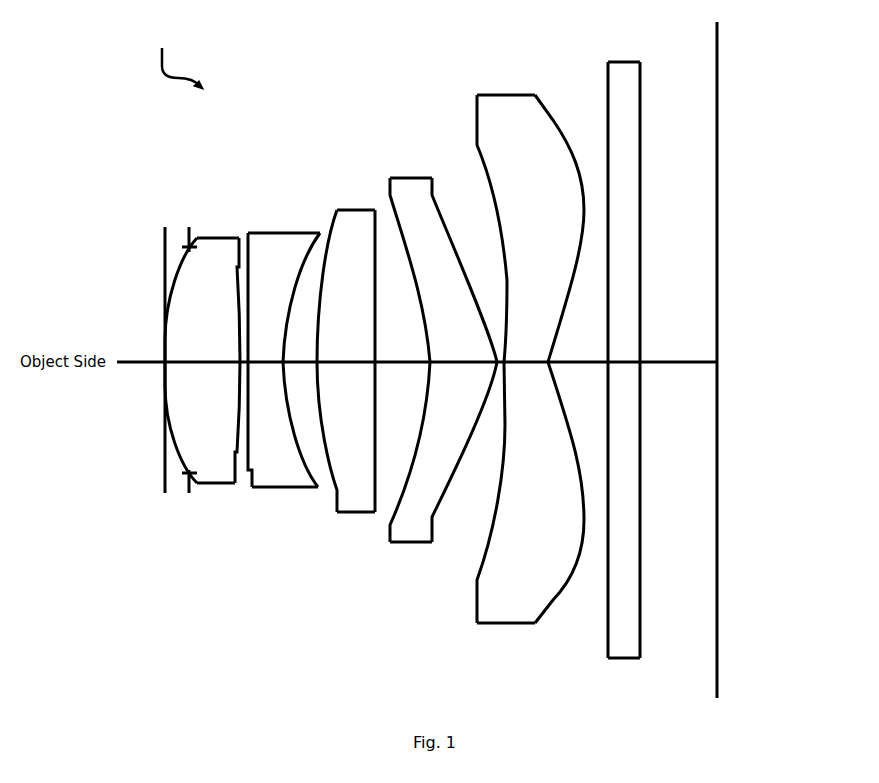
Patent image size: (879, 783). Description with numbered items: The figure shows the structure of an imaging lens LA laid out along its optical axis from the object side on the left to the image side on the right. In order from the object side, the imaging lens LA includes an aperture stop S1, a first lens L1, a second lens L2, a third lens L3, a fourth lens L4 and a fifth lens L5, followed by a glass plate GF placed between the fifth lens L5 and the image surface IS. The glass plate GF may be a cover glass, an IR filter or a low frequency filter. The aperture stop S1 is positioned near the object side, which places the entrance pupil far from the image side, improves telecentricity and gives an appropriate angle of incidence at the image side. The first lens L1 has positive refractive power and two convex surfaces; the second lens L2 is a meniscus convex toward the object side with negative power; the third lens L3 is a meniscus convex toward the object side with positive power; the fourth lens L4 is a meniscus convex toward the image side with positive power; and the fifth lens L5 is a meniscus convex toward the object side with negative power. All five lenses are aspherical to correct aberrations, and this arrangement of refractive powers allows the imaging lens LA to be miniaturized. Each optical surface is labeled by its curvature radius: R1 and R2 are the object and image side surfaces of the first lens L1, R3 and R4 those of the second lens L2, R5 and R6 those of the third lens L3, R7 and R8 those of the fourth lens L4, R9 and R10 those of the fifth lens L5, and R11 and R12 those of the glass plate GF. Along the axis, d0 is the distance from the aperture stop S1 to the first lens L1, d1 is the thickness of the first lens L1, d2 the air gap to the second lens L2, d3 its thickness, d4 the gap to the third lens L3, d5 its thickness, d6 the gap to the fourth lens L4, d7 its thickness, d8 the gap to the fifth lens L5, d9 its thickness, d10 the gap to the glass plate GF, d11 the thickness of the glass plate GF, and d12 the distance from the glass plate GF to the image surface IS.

The imaging lens LA is at (180, 47).
The first lens L1 is at (178, 383).
The second lens L2 is at (262, 387).
The third lens L3 is at (323, 398).
The fourth lens L4 is at (417, 371).
The fifth lens L5 is at (491, 371).
The aperture stop S1 is at (188, 248).
The glass plate GF is at (621, 379).
The image surface IS is at (717, 205).
The curvature radius of the object side surface of the first lens R1 is at (165, 398).
The curvature radius of the image side surface of the first lens R2 is at (238, 383).
The curvature radius of the object side surface of the second lens R3 is at (246, 386).
The curvature radius of the image side surface of the second lens R4 is at (285, 388).
The curvature radius of the object side surface of the third lens R5 is at (316, 387).
The curvature radius of the image side surface of the third lens R6 is at (373, 380).
The curvature radius of the object side surface of the fourth lens R7 is at (430, 378).
The curvature radius of the image side surface of the fourth lens R8 is at (495, 385).
The curvature radius of the object side surface of the fifth lens R9 is at (505, 425).
The curvature radius of the image side surface of the fifth lens R10 is at (560, 410).
The curvature radius of the object side surface of the glass plate R11 is at (609, 478).
The curvature radius of the image side surface of the glass plate R12 is at (640, 478).
The distance from the aperture stop to the object side surface of the first lens d0 is at (180, 260).
The axial thickness of the first lens d1 is at (202, 352).
The axial distance from the first lens to the second lens d2 is at (246, 362).
The axial thickness of the second lens d3 is at (265, 352).
The axial distance from the second lens to the third lens d4 is at (300, 352).
The axial thickness of the third lens d5 is at (346, 352).
The axial distance from the third lens to the fourth lens d6 is at (402, 352).
The axial thickness of the fourth lens d7 is at (463, 352).
The axial distance from the fourth lens to the fifth lens d8 is at (497, 357).
The axial thickness of the fifth lens d9 is at (526, 352).
The axial distance from the fifth lens to the glass plate d10 is at (578, 352).
The axial thickness of the glass plate d11 is at (625, 352).
The axial distance from the glass plate to the image surface d12 is at (678, 352).